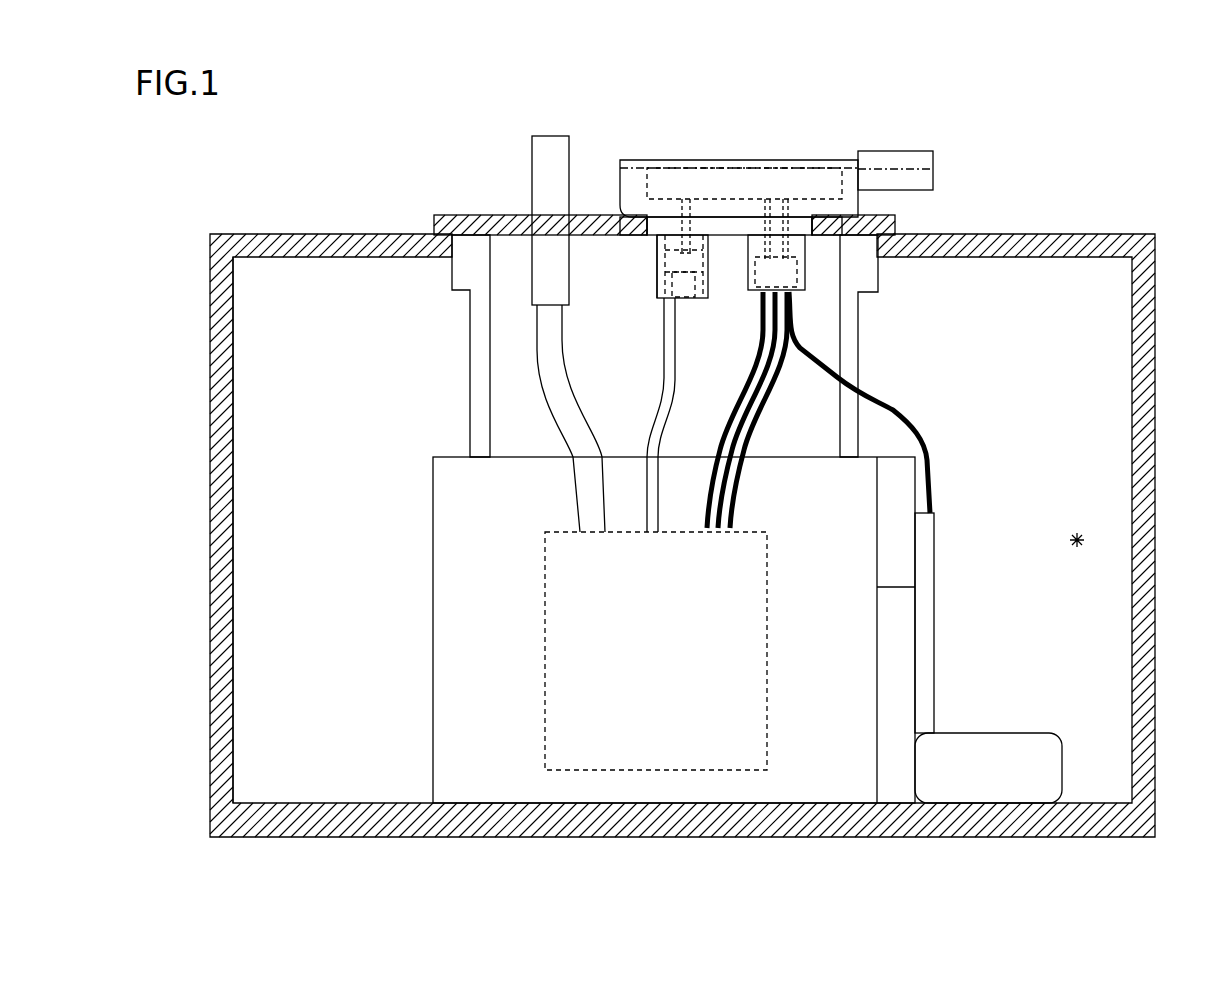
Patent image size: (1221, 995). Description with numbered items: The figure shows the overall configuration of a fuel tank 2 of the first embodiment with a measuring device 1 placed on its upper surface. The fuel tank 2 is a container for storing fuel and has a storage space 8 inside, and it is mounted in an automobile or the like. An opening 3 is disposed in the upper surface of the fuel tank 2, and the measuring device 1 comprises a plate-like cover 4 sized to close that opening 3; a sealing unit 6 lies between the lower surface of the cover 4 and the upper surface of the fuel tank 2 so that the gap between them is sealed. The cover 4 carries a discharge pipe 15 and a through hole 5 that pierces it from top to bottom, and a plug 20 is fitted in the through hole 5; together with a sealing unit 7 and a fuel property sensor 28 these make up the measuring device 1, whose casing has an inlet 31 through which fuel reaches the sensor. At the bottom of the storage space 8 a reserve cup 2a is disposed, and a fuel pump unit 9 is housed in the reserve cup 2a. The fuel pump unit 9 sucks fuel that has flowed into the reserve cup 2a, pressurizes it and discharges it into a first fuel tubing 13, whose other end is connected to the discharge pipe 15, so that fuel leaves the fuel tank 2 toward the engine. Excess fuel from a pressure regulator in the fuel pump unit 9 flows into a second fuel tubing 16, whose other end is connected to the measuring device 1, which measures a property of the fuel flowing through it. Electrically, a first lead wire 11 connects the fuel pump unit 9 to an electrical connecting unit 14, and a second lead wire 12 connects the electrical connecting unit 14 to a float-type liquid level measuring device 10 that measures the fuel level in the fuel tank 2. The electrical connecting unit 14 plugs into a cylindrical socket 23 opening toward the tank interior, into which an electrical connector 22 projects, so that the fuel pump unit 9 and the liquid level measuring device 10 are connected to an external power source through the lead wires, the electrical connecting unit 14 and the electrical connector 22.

The measuring device 1 is at (935, 164).
The fuel tank 2 is at (1155, 238).
The reserve cup 2a is at (433, 623).
The opening 3 is at (853, 257).
The cover 4 is at (893, 227).
The through hole 5 is at (655, 235).
The sealing unit 6 is at (418, 233).
The sealing unit 7 is at (642, 224).
The storage space 8 is at (1084, 540).
The fuel pump unit 9 is at (685, 656).
The liquid level measuring device 10 is at (1030, 770).
The first lead wire 11 is at (760, 377).
The second lead wire 12 is at (923, 448).
The first fuel tubing 13 is at (548, 344).
The electrical connecting unit 14 is at (758, 258).
The discharge pipe 15 is at (543, 165).
The second fuel tubing 16 is at (652, 430).
The plug 20 is at (753, 159).
The electrical connector 22 is at (803, 250).
The socket 23 is at (870, 188).
The fuel property sensor 28 is at (688, 250).
The inlet 31 is at (660, 284).